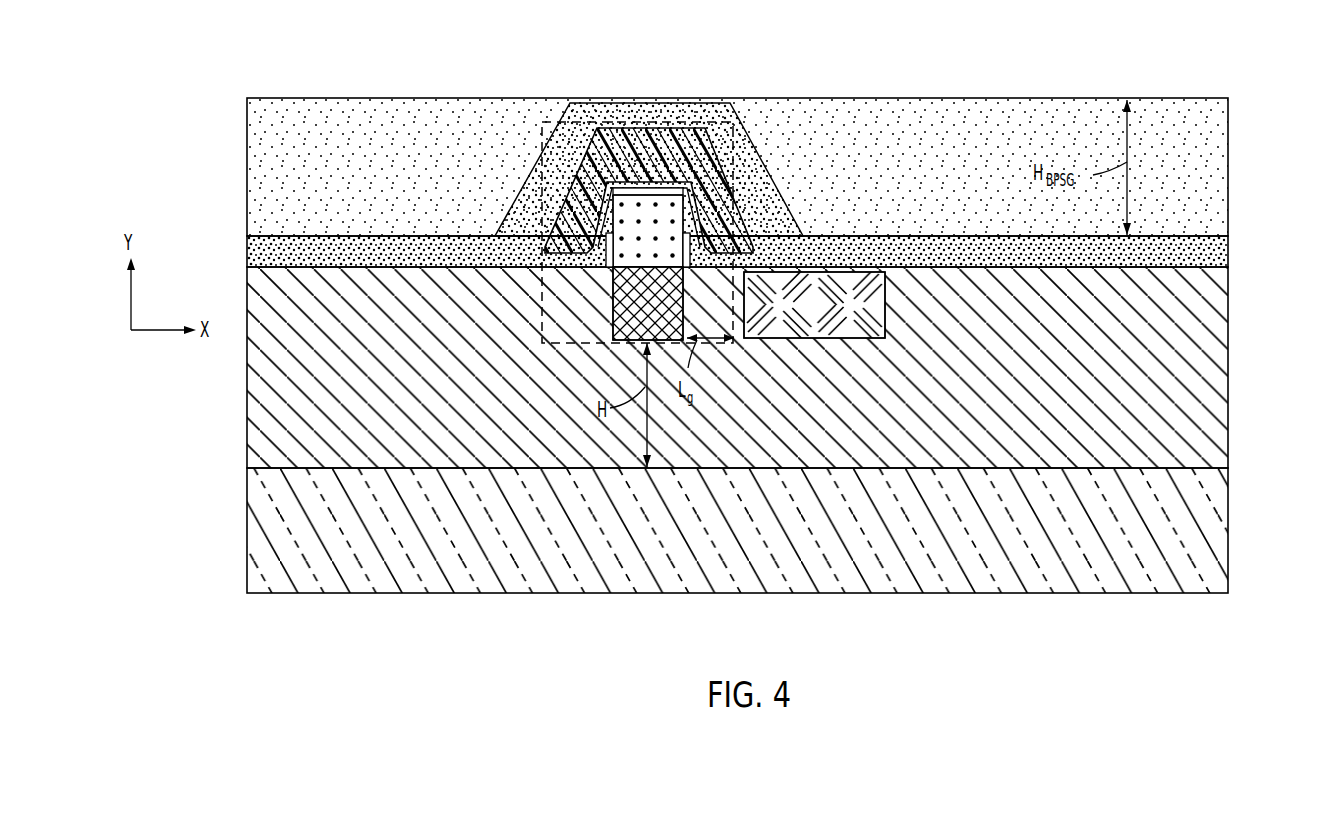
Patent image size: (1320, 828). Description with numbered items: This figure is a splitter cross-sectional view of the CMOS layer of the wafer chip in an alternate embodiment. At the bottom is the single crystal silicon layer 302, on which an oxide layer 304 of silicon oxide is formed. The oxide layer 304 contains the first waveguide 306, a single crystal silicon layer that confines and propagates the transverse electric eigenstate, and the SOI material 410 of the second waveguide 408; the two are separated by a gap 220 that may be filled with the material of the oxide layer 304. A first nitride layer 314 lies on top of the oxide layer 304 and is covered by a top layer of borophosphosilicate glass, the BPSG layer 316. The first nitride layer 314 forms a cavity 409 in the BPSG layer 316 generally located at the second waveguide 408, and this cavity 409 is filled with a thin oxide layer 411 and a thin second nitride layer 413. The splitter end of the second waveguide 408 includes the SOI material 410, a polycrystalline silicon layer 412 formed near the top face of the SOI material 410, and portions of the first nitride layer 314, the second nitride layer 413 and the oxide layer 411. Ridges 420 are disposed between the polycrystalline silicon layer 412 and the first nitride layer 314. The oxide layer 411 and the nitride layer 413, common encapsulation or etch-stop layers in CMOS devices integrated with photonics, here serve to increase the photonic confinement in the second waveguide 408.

The silicon layer 302 is at (1037, 575).
The oxide layer 304 is at (1223, 348).
The first waveguide 306 is at (843, 337).
The first nitride layer 314 is at (1213, 253).
The BPSG layer 316 is at (1213, 173).
The second waveguide 408 is at (540, 283).
The cavity 409 is at (717, 160).
The SOI material 410 is at (615, 343).
The oxide layer 411 is at (548, 162).
The polycrystalline silicon layer 412 is at (647, 211).
The second nitride layer 413 is at (597, 167).
The ridges 420 is at (610, 250).
The gap 220 is at (720, 330).